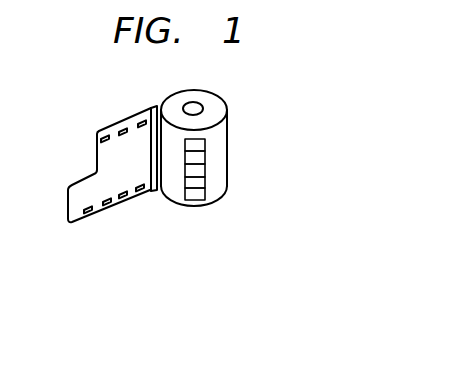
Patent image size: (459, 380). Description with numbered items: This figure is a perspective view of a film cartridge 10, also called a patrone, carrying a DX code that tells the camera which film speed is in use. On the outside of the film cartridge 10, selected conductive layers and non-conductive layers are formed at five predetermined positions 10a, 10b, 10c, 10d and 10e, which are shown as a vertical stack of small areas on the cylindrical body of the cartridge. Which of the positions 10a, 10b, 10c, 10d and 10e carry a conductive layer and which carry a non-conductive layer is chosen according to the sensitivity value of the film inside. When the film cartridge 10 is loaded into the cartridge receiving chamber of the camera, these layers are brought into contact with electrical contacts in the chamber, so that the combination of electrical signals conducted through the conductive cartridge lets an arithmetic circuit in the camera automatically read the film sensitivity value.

The film cartridge 10 is at (218, 96).
The predetermined position 10a is at (195, 146).
The predetermined position 10b is at (202, 161).
The predetermined position 10c is at (202, 173).
The predetermined position 10d is at (202, 185).
The predetermined position 10e is at (204, 196).